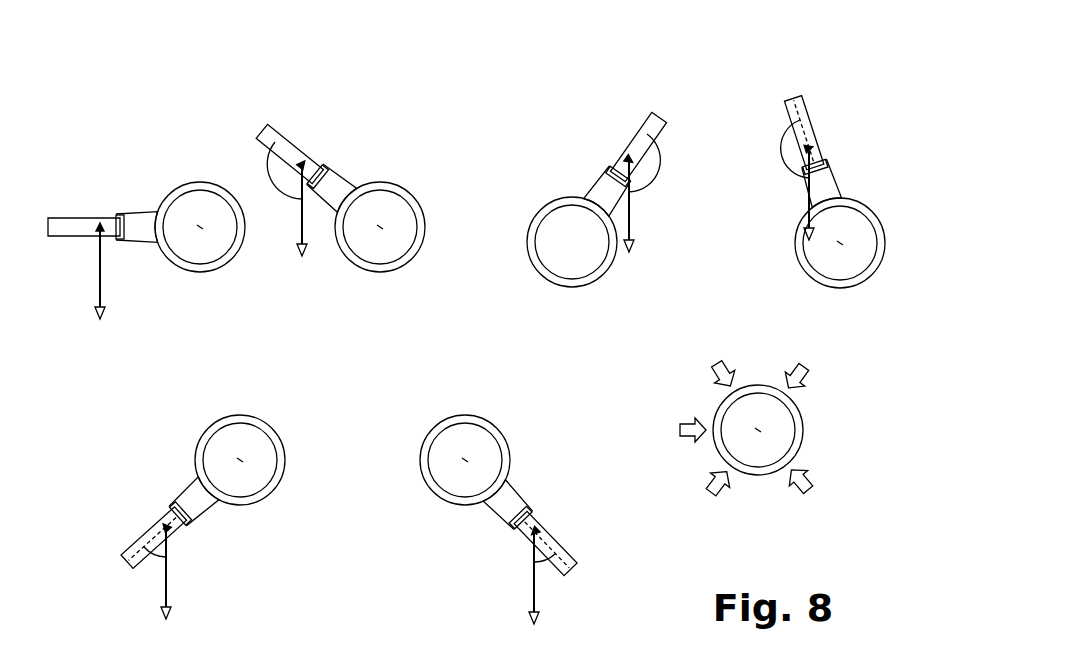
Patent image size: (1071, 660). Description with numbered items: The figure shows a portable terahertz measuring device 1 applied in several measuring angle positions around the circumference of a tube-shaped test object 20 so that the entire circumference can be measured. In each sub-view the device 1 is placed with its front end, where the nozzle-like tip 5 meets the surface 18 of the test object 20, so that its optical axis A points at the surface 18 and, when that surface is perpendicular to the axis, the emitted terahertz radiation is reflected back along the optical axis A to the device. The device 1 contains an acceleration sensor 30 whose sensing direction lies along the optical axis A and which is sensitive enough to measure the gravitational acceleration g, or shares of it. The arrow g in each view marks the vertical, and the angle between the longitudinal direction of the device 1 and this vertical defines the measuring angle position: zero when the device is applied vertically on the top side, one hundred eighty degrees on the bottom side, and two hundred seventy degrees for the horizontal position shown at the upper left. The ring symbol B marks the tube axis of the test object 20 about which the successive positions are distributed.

The terahertz measuring device 1 is at (100, 215).
The nozzle 5 is at (140, 215).
The surface 18 is at (200, 182).
The test object 20 is at (196, 272).
The acceleration sensor 30 is at (105, 222).
The optical axis A is at (792, 100).
The ring axis B is at (205, 230).
The gravitational acceleration g is at (803, 203).